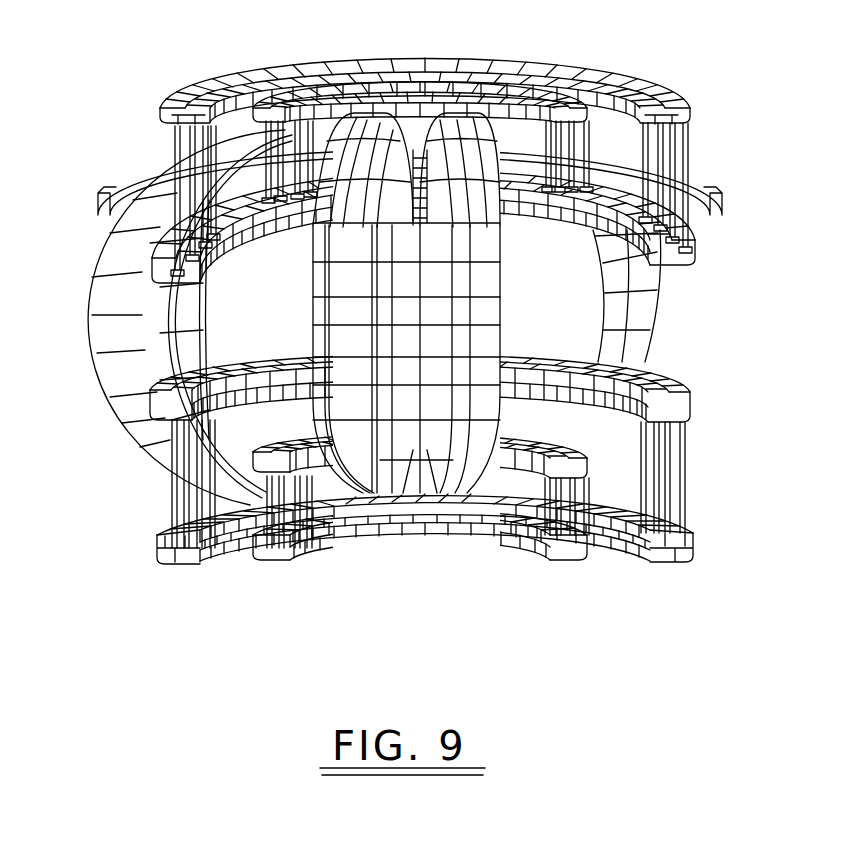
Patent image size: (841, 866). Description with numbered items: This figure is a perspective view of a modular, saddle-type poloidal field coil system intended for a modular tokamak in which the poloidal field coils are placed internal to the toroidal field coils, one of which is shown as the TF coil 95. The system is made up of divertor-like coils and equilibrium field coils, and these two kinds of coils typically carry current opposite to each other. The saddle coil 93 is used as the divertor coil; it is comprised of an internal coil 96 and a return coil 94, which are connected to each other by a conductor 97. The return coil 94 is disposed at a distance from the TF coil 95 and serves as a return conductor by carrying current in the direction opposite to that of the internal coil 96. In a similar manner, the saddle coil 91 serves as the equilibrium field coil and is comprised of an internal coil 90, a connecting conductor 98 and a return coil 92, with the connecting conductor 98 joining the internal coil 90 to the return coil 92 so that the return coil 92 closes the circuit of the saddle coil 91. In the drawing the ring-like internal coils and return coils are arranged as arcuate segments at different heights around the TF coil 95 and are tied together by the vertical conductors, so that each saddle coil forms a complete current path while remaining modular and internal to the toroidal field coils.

The internal coil 90 is at (536, 430).
The saddle coil 91 is at (248, 104).
The return coil 92 is at (508, 534).
The saddle coil 93 is at (150, 103).
The return coil 94 is at (690, 537).
The TF coil 95 is at (104, 412).
The internal coil 96 is at (678, 384).
The conductor 97 is at (681, 476).
The connecting conductor 98 is at (103, 190).